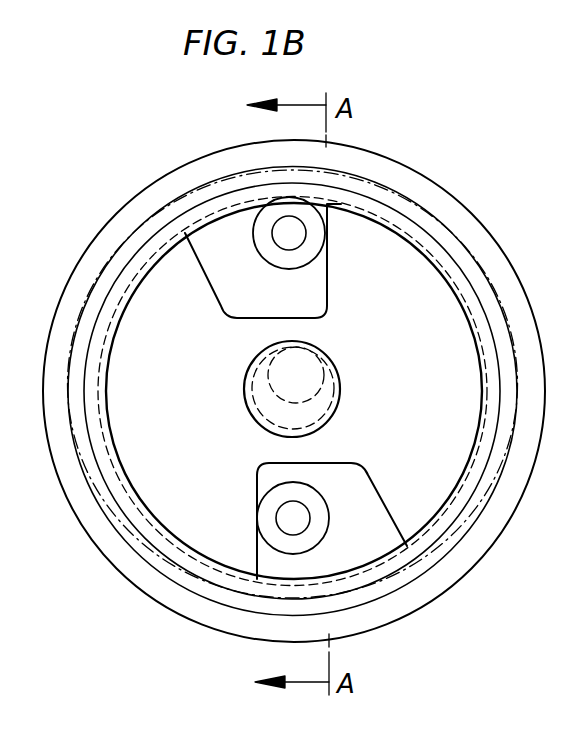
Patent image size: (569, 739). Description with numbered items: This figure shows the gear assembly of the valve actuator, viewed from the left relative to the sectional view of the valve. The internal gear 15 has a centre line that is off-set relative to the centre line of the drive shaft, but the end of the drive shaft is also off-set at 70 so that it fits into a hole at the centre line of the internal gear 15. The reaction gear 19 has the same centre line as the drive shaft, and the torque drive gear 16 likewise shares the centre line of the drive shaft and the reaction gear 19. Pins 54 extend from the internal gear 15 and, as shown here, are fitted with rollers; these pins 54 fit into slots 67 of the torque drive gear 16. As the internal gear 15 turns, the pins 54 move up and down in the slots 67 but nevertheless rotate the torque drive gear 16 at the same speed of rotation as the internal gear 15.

The internal gear 15 is at (370, 562).
The torque drive gear 16 is at (414, 377).
The reaction gear 19 is at (450, 568).
The pins 54 is at (268, 252).
The slots 67 is at (232, 240).
The off-set end of drive shaft 70 is at (280, 386).